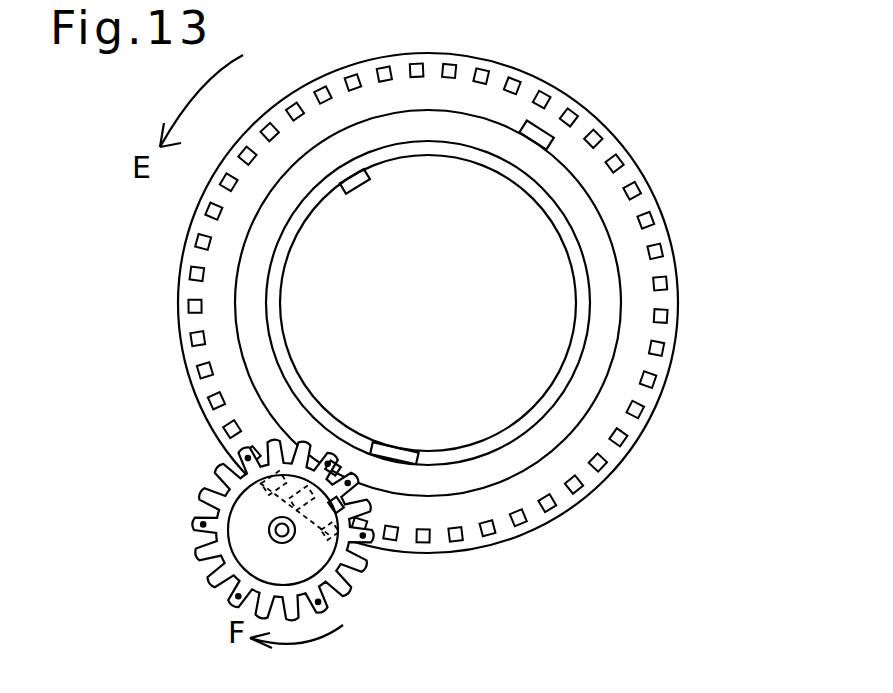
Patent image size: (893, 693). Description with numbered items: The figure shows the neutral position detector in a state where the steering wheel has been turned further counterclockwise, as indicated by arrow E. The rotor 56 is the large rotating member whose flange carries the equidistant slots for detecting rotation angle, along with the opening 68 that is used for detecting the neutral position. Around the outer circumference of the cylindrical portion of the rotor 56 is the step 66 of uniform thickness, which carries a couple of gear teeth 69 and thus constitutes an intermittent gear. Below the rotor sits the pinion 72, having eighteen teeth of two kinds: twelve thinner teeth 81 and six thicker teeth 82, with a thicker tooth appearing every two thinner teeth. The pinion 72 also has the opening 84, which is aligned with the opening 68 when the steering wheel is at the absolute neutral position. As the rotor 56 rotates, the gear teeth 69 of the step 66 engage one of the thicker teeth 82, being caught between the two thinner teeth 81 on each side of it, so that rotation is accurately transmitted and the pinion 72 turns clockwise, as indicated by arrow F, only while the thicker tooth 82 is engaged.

The rotor 56 is at (679, 300).
The step 66 is at (600, 305).
The opening 68 is at (547, 120).
The gear teeth 69 is at (327, 440).
The pinion 72 is at (217, 533).
The thinner teeth 81 is at (292, 452).
The thicker teeth 82 is at (340, 458).
The opening 84 is at (333, 512).